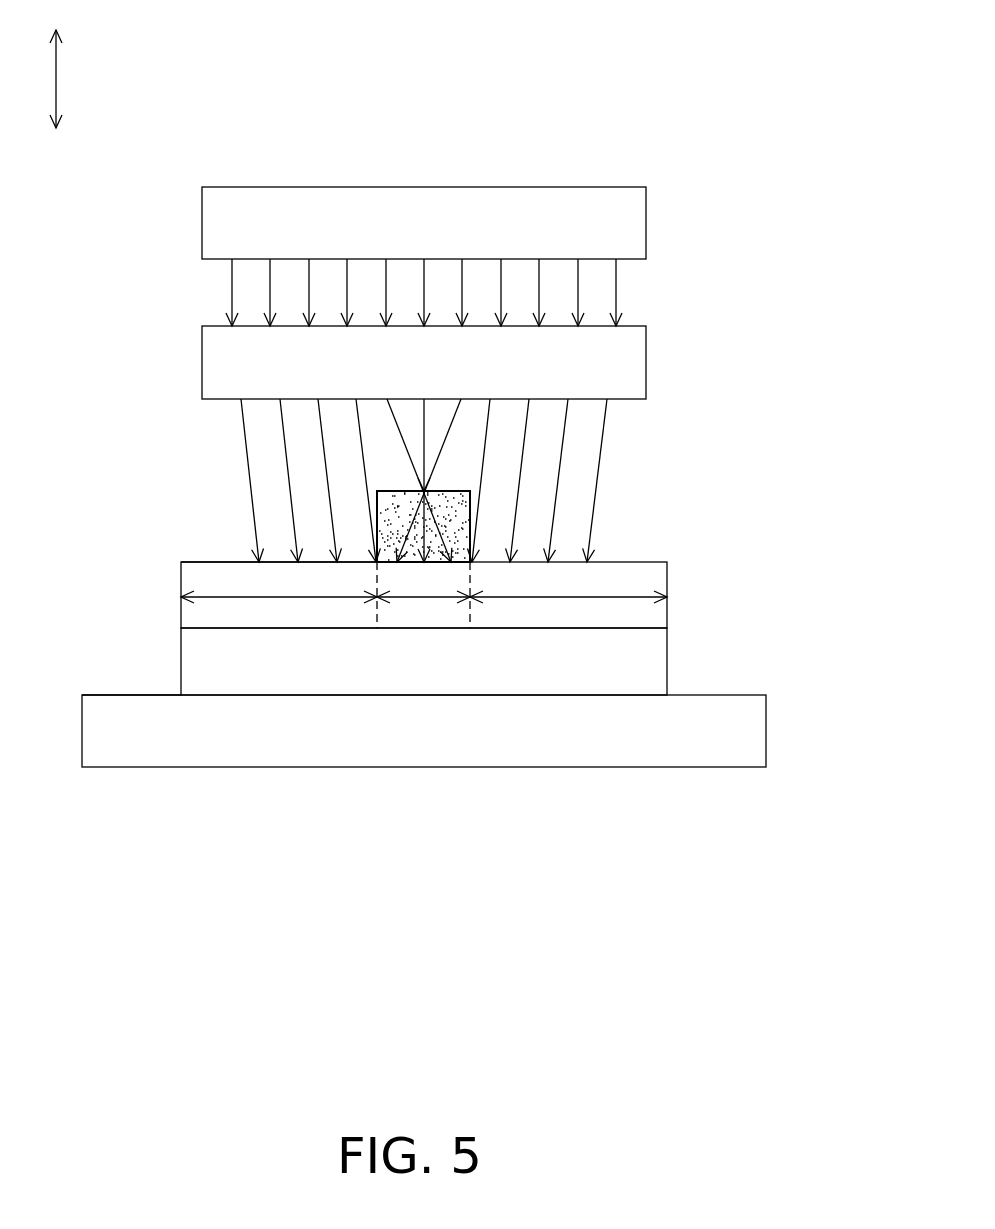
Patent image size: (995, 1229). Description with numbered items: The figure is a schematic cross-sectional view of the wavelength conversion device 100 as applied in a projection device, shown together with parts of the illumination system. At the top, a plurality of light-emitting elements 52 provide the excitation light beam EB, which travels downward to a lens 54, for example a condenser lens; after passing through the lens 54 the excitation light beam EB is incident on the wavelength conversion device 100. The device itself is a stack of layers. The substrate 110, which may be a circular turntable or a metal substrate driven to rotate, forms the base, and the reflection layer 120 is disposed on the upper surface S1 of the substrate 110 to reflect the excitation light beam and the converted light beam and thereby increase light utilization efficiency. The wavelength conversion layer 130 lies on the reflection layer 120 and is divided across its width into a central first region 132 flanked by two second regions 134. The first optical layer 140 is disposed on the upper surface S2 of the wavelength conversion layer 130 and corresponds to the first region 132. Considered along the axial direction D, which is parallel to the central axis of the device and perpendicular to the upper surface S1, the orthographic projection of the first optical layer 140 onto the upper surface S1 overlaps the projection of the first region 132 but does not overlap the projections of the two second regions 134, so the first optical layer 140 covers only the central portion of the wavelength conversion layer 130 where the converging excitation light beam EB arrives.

The light-emitting elements 52 is at (625, 217).
The lens 54 is at (623, 361).
The excitation light beam EB is at (617, 287).
The wavelength conversion device 100 is at (765, 470).
The substrate 110 is at (748, 733).
The reflection layer 120 is at (647, 650).
The wavelength conversion layer 130 is at (660, 613).
The first region 132 is at (414, 597).
The second regions 134 is at (220, 597).
The first optical layer 140 is at (460, 543).
The upper surface of the substrate S1 is at (112, 695).
The upper surface of the wavelength conversion layer S2 is at (192, 560).
The axial direction D is at (69, 79).